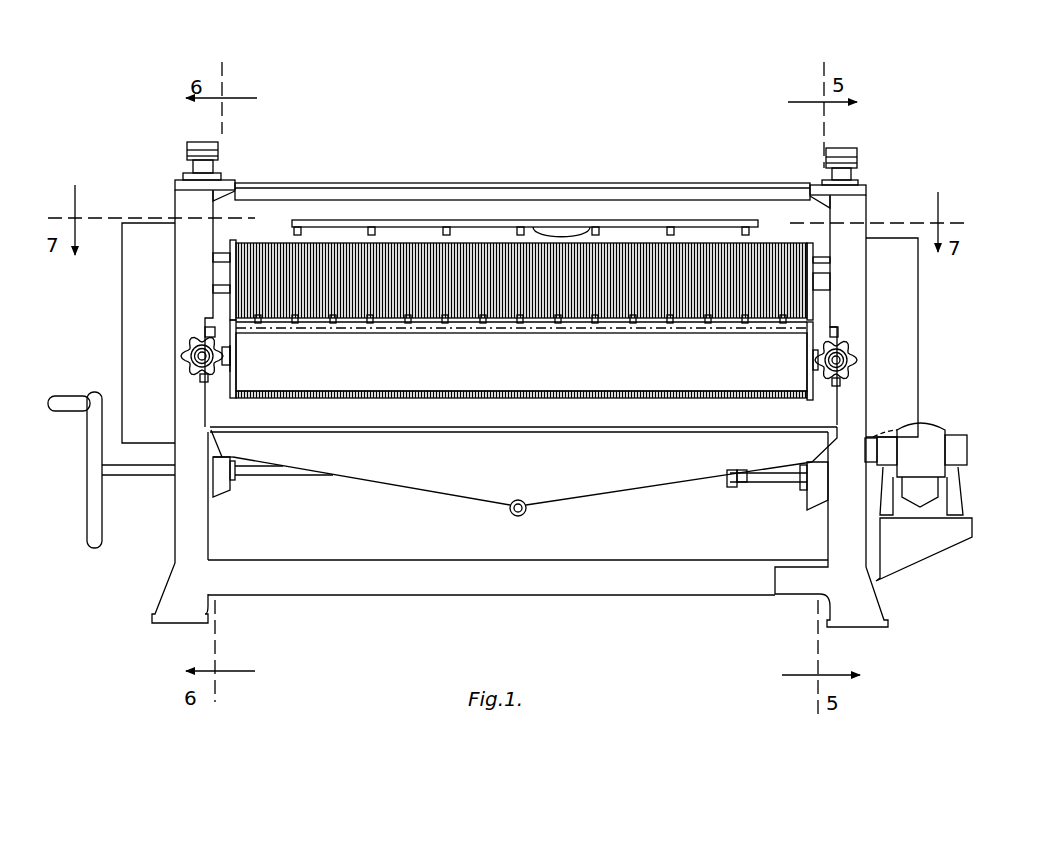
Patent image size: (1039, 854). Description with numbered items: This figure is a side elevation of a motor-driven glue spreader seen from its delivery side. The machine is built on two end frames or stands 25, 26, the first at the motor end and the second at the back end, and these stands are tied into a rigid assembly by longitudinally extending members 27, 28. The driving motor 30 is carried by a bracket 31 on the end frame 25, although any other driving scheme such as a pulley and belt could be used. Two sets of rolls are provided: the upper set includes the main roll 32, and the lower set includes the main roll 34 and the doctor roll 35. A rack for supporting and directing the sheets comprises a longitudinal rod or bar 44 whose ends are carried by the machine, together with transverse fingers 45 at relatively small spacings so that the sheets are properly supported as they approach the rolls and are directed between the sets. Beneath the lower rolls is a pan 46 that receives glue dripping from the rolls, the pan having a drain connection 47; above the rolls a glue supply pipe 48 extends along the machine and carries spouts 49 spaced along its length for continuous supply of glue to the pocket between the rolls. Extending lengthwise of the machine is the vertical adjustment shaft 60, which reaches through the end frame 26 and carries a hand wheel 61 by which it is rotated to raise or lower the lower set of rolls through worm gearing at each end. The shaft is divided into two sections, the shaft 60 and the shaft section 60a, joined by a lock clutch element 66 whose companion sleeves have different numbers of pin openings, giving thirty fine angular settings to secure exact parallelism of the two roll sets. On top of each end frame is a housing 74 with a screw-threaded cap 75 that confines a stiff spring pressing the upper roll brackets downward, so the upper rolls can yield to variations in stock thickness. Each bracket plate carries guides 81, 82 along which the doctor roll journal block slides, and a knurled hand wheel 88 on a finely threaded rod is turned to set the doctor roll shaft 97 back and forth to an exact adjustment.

The end frame 25 is at (868, 308).
The end frame 26 is at (174, 285).
The longitudinally extending member 27 is at (490, 196).
The longitudinally extending member 28 is at (590, 585).
The driving motor 30 is at (930, 430).
The bracket 31 is at (920, 548).
The main roll 32 is at (382, 262).
The main roll 34 is at (390, 400).
The doctor roll 35 is at (602, 356).
The longitudinal rod or bar 44 is at (332, 330).
The transverse fingers 45 is at (295, 324).
The pan 46 is at (520, 483).
The drain connection 47 is at (512, 515).
The glue supply pipe 48 is at (643, 226).
The spouts 49 is at (550, 230).
The vertical adjustment shaft 60 is at (133, 480).
The shaft section 60a is at (776, 480).
The hand wheel 61 is at (87, 492).
The lock clutch element 66 is at (729, 490).
The housing 74 is at (193, 168).
The cap 75 is at (187, 150).
The guide 81 is at (205, 383).
The guide 82 is at (206, 331).
The hand wheel 88 is at (186, 356).
The doctor roll shaft 97 is at (232, 366).